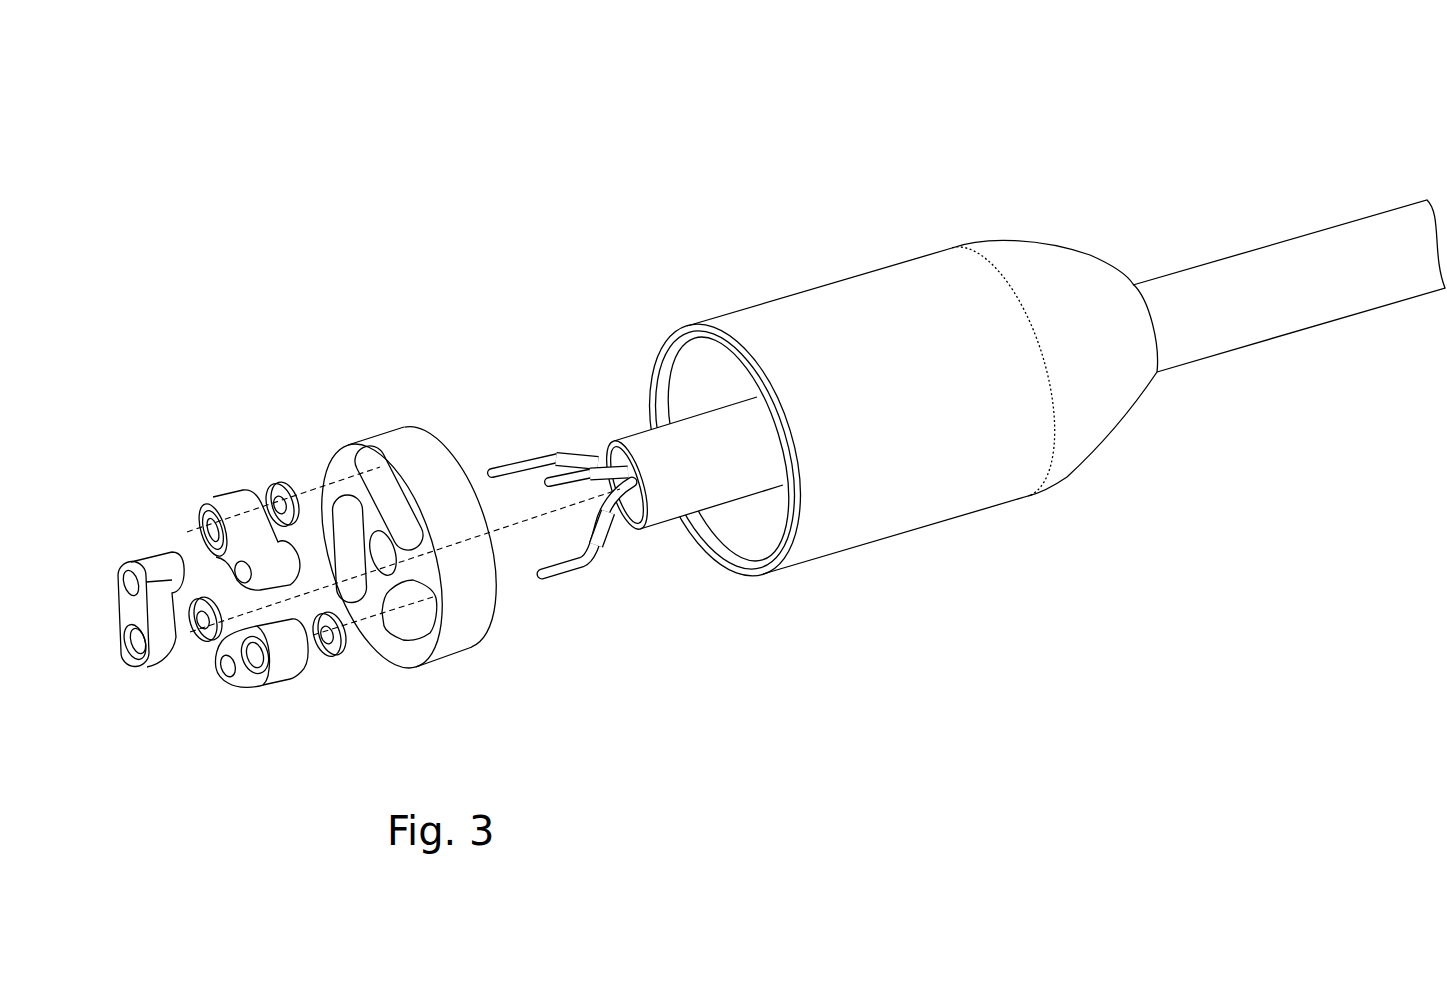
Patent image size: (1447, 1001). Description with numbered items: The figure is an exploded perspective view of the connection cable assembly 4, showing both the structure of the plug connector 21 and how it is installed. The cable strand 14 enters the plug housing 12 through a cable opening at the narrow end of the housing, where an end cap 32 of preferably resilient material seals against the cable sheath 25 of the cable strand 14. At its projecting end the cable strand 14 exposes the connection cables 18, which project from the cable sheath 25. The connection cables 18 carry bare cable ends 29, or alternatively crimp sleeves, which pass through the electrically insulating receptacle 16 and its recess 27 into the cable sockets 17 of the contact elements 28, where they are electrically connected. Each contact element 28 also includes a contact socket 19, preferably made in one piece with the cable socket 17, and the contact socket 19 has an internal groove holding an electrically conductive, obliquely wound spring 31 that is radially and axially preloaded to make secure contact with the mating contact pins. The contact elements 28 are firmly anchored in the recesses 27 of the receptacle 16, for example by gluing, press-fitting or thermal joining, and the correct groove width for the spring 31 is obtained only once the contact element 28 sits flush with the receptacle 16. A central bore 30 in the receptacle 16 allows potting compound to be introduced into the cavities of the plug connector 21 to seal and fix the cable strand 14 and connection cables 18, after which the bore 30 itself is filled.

The connection cable assembly 4 is at (1268, 191).
The plug housing 12 is at (858, 332).
The cable strand 14 is at (1345, 308).
The electrically insulating receptacle 16 is at (413, 447).
The cable socket 17 is at (117, 578).
The connection cable 18 is at (620, 530).
The contact socket 19 is at (119, 662).
The plug connector 21 is at (1008, 195).
The cable sheath 25 is at (600, 447).
The recess 27 is at (347, 443).
The contact element 28 is at (225, 500).
The cable end 29 is at (559, 566).
The central bore 30 is at (385, 652).
The obliquely wound spring 31 is at (273, 483).
The end cap 32 is at (1097, 438).